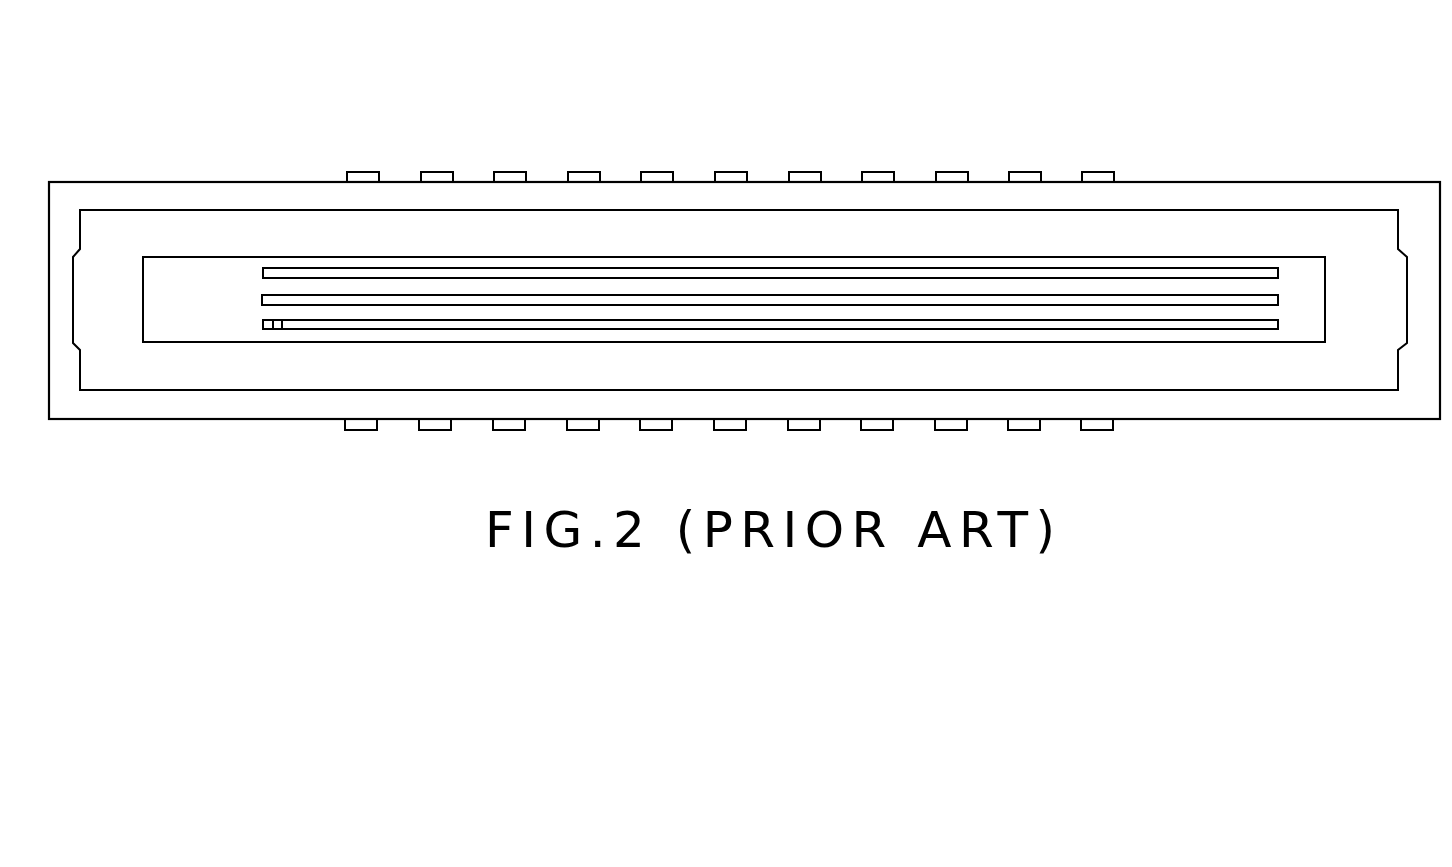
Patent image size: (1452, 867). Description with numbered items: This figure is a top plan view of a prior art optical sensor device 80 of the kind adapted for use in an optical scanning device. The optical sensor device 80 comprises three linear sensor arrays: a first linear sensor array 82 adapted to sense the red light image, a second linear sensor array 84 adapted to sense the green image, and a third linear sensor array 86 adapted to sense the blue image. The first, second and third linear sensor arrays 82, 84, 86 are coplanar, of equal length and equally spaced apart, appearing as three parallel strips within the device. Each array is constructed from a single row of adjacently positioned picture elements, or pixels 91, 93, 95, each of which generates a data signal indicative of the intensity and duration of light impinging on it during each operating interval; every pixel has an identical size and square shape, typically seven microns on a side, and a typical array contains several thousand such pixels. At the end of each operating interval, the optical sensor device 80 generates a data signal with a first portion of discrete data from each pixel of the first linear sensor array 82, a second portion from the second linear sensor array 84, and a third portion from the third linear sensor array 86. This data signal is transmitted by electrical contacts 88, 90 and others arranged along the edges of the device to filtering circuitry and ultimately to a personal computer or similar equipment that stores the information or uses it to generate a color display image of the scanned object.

The optical sensor device 80 is at (1289, 130).
The first linear sensor array 82 is at (1188, 270).
The second linear sensor array 84 is at (1257, 295).
The third linear sensor array 86 is at (1278, 320).
The electrical contact 88 is at (1040, 172).
The electrical contact 90 is at (1113, 172).
The pixel 91 is at (263, 326).
The pixel 93 is at (268, 329).
The pixel 95 is at (278, 329).